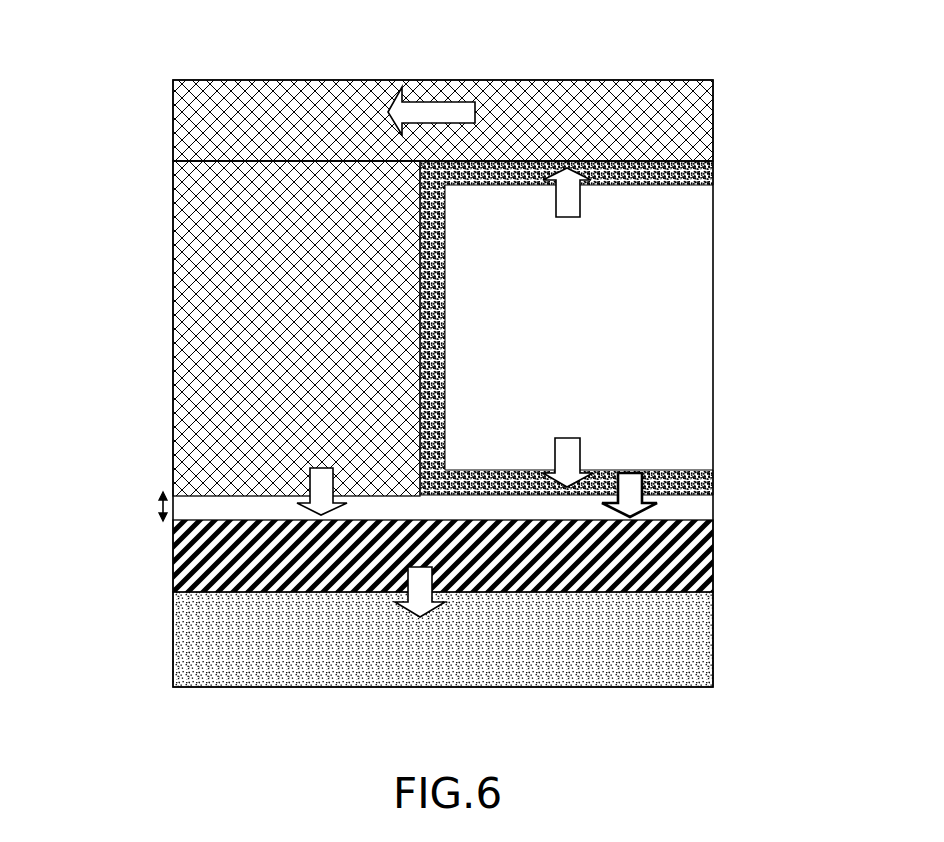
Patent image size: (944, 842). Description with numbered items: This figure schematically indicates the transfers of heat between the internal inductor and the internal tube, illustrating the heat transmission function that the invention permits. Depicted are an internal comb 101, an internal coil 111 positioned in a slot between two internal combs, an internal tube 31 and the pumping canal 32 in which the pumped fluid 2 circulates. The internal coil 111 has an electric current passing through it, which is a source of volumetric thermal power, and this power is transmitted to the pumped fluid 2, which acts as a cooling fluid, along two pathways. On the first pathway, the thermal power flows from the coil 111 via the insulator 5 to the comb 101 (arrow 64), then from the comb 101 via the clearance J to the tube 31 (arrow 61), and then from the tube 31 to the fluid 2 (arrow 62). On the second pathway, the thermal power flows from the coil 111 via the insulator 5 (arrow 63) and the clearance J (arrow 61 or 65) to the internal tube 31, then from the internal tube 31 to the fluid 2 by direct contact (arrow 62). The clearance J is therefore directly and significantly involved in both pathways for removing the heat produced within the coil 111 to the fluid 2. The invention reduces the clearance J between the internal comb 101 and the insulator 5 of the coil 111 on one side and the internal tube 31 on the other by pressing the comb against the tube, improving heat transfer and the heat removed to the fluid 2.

The internal comb 101 is at (222, 208).
The insulator 5 is at (682, 172).
The internal coil 111 is at (662, 295).
The arrow 64 is at (566, 170).
The arrow 63 is at (650, 448).
The arrow 65 is at (640, 502).
The arrow 61 is at (325, 480).
The arrow 62 is at (420, 687).
The clearance J is at (158, 508).
The internal tube 31 is at (200, 568).
The pumping canal 32 is at (210, 648).
The pumped fluid 2 is at (443, 639).